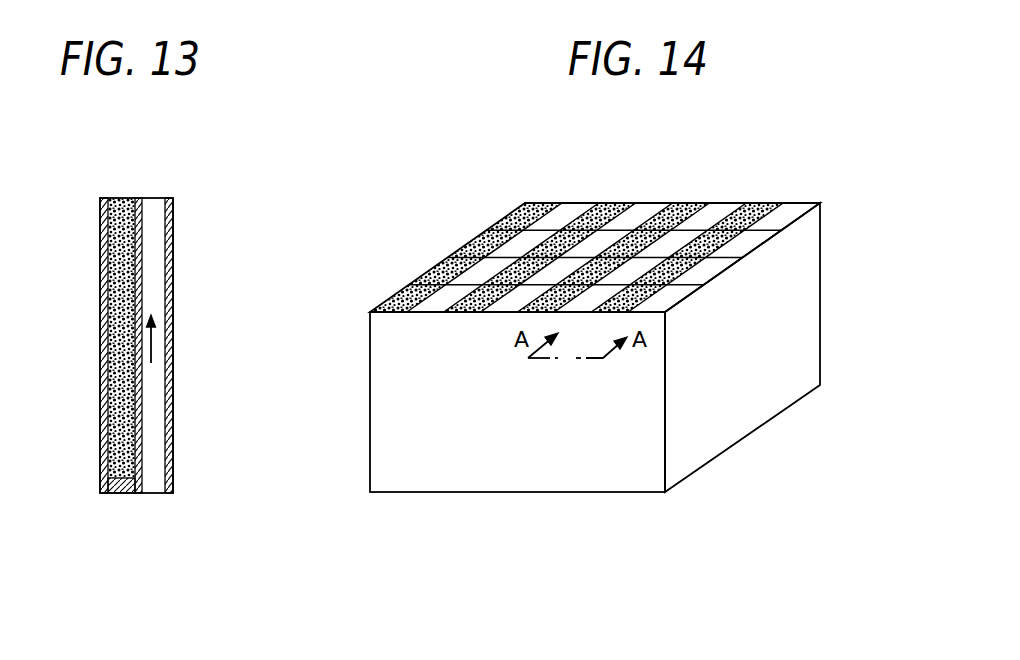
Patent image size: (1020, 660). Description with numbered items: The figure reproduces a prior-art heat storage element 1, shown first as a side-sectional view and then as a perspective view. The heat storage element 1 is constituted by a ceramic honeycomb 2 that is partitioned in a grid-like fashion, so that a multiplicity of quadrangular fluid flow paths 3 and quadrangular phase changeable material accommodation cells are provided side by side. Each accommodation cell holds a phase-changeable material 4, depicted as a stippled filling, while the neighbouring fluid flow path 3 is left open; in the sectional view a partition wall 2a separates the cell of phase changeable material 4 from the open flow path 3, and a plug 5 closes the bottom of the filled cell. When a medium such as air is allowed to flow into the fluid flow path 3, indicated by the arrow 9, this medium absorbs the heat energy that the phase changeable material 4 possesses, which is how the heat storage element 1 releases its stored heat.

In FIG. 14, the heat storage element 1 is at (634, 314).
In FIG. 14, the ceramic honeycomb 2 is at (823, 298).
In FIG. 13, the partition wall 2a is at (100, 310).
In FIG. 13, the fluid flow path 3 is at (152, 203).
In FIG. 14, the fluid flow path 3 is at (576, 207).
In FIG. 13, the phase-changeable material 4 is at (117, 212).
In FIG. 14, the phase-changeable material 4 is at (612, 205).
In FIG. 13, the plugging portion 5 is at (119, 494).
In FIG. 13, the flow direction of exhaust gas 9 is at (153, 343).